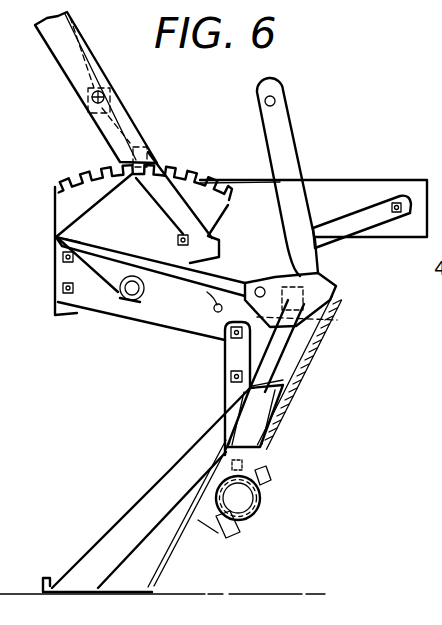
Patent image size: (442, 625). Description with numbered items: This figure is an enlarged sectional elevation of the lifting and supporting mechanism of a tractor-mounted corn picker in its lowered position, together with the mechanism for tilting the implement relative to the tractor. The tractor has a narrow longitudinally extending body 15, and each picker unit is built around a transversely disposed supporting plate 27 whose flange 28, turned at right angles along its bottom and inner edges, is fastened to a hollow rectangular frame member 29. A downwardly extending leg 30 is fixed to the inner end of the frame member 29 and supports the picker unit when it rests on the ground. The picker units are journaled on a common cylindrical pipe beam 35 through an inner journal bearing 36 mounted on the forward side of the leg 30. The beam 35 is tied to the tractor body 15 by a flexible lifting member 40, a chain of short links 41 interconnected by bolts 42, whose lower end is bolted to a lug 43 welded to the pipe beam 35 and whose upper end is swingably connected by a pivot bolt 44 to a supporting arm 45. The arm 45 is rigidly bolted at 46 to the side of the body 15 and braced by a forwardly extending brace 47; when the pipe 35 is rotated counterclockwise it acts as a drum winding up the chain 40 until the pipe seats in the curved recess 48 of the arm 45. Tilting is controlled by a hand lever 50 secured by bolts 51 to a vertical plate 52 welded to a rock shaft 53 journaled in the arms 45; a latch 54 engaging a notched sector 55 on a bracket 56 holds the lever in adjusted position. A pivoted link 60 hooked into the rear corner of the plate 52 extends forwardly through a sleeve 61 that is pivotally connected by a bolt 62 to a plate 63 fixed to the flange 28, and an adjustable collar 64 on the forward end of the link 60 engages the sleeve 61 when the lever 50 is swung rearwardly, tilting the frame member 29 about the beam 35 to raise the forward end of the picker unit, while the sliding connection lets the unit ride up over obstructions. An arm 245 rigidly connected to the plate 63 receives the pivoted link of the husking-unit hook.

The tractor body 15 is at (373, 192).
The supporting plate 27 is at (305, 362).
The flange 28 is at (293, 388).
The frame member 29 is at (270, 442).
The leg 30 is at (135, 517).
The supporting beam 35 is at (262, 504).
The inner journal bearing 36 is at (247, 523).
The flexible lifting member 40 is at (197, 396).
The link 41 is at (233, 392).
The bolt 42 is at (226, 375).
The lug 43 is at (228, 466).
The pivot bolt 44 is at (222, 340).
The supporting arm 45 is at (138, 313).
The bolt 46 is at (62, 288).
The brace 47 is at (332, 230).
The curved recess 48 is at (213, 309).
The hand lever 50 is at (62, 65).
The bolt 51 is at (184, 236).
The plate 52 is at (147, 236).
The rock shaft 53 is at (115, 293).
The latch 54 is at (98, 125).
The notched sector 55 is at (80, 167).
The bracket 56 is at (63, 201).
The pivoted link 60 is at (58, 237).
The sleeve 61 is at (311, 319).
The bolt 62 is at (308, 275).
The plate 63 is at (306, 338).
The adjustable collar 64 is at (303, 293).
The arm 245 is at (283, 160).